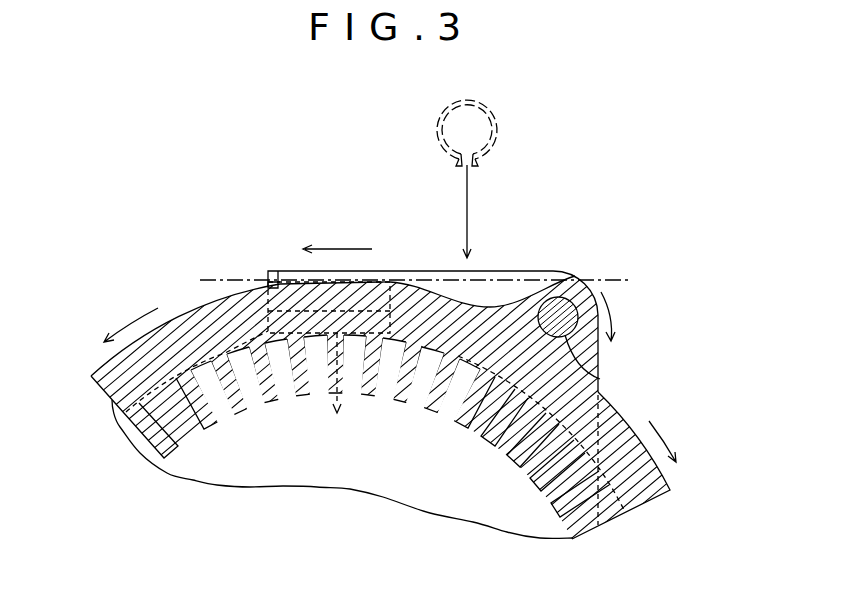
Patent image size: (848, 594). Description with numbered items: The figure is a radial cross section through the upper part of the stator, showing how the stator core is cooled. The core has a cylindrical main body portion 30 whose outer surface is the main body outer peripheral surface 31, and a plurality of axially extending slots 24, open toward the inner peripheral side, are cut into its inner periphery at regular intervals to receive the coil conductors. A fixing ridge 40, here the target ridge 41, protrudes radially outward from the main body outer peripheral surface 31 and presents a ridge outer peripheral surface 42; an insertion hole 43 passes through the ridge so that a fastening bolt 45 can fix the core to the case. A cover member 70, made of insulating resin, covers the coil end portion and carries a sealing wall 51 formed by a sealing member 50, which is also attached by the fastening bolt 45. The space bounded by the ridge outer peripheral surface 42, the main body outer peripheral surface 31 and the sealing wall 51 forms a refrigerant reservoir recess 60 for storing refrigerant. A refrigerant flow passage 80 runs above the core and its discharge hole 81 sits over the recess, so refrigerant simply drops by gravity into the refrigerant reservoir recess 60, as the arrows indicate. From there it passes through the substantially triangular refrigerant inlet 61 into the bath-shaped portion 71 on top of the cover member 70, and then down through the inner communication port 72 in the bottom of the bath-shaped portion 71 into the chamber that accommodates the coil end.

The slot 24 is at (490, 438).
The main body portion 30 is at (110, 372).
The main body outer peripheral surface 31 is at (442, 272).
The fixing ridge 40 is at (671, 342).
The target ridge 41 is at (610, 347).
The ridge outer peripheral surface 42 is at (533, 270).
The insertion hole 43 is at (600, 379).
The fastening bolt 45 is at (577, 276).
The sealing member 50 is at (491, 223).
The sealing wall 51 is at (517, 268).
The refrigerant reservoir recess 60 is at (492, 289).
The refrigerant inlet 61 is at (389, 270).
The cover member 70 is at (210, 338).
The bath-shaped portion 71 is at (291, 270).
The inner communication port 72 is at (329, 398).
The refrigerant flow passage 80 is at (490, 110).
The discharge hole 81 is at (458, 167).